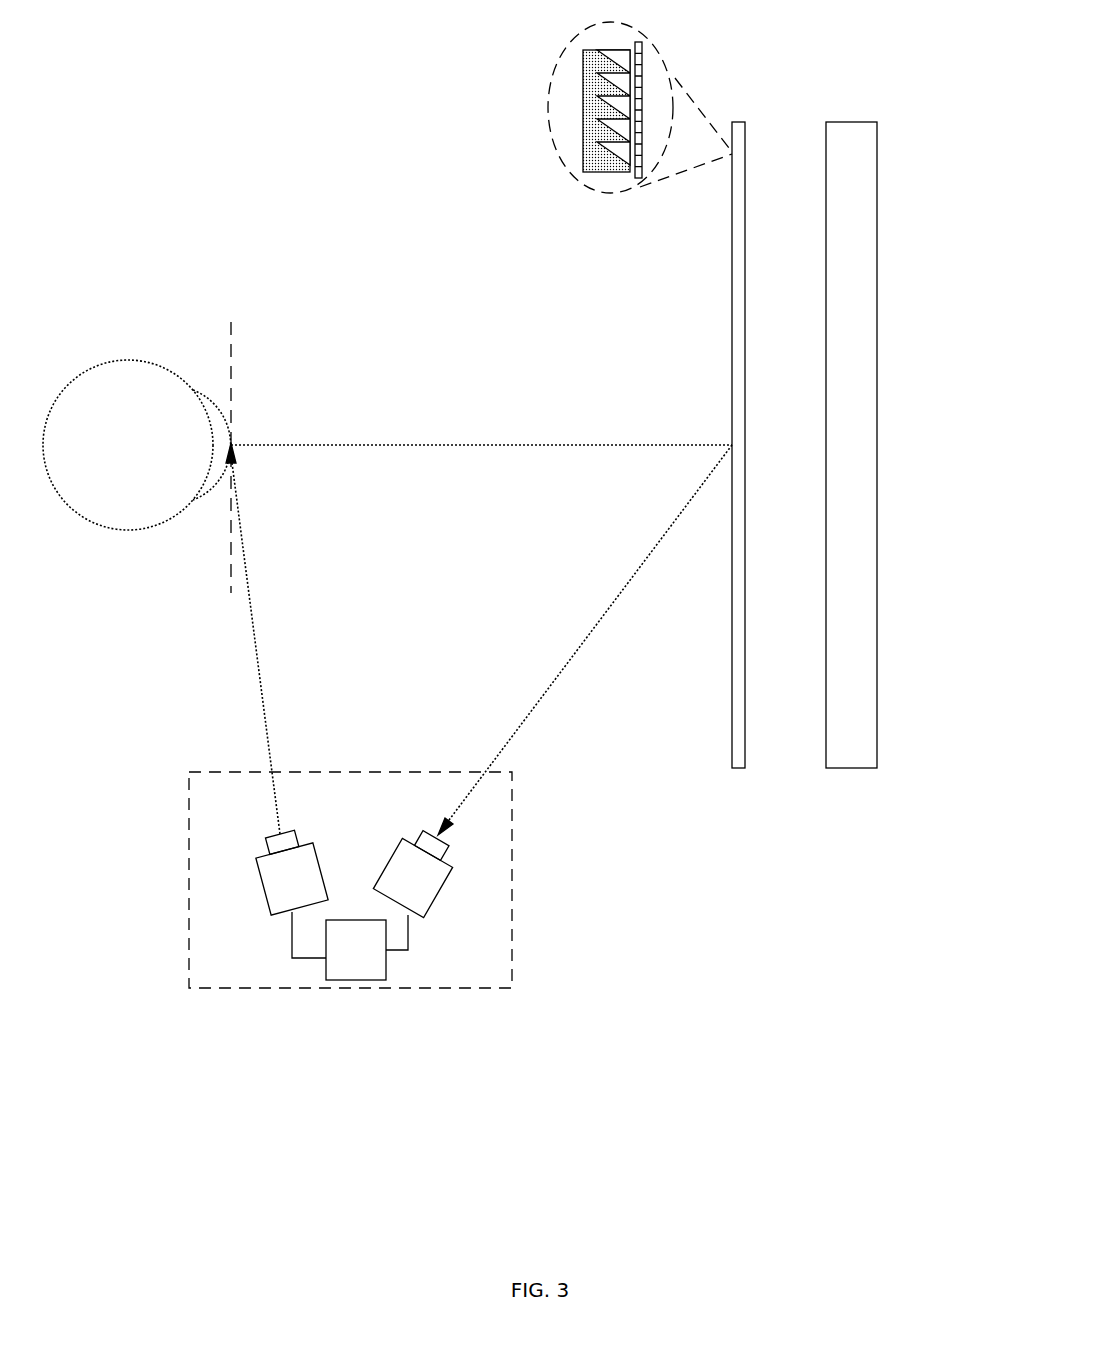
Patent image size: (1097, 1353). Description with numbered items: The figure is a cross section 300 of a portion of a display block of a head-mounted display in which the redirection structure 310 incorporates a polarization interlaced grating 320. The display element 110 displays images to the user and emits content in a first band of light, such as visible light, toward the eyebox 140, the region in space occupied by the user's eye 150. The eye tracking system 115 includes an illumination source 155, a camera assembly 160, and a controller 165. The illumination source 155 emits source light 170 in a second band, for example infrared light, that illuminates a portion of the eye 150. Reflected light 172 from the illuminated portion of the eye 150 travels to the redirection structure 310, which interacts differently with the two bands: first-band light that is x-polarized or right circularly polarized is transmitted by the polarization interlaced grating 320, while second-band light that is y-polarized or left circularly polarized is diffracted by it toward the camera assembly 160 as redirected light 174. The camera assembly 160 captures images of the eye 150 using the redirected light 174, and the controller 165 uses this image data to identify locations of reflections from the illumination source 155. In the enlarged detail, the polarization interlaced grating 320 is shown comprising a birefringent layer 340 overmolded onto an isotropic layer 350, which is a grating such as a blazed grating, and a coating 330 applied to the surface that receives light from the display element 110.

The cross section 300 is at (50, 63).
The display element 110 is at (877, 243).
The eye tracking system 115 is at (385, 915).
The eyebox 140 is at (232, 370).
The eye 150 is at (68, 505).
The illumination source 155 is at (263, 900).
The camera assembly 160 is at (408, 882).
The controller 165 is at (360, 958).
The source light 170 is at (261, 685).
The reflected light 172 is at (527, 445).
The redirected light 174 is at (535, 705).
The redirection structure 310 is at (745, 768).
The polarization interlaced grating 320 is at (553, 176).
The coating 330 is at (710, 107).
The birefringent layer 340 is at (600, 157).
The isotropic layer 350 is at (633, 52).